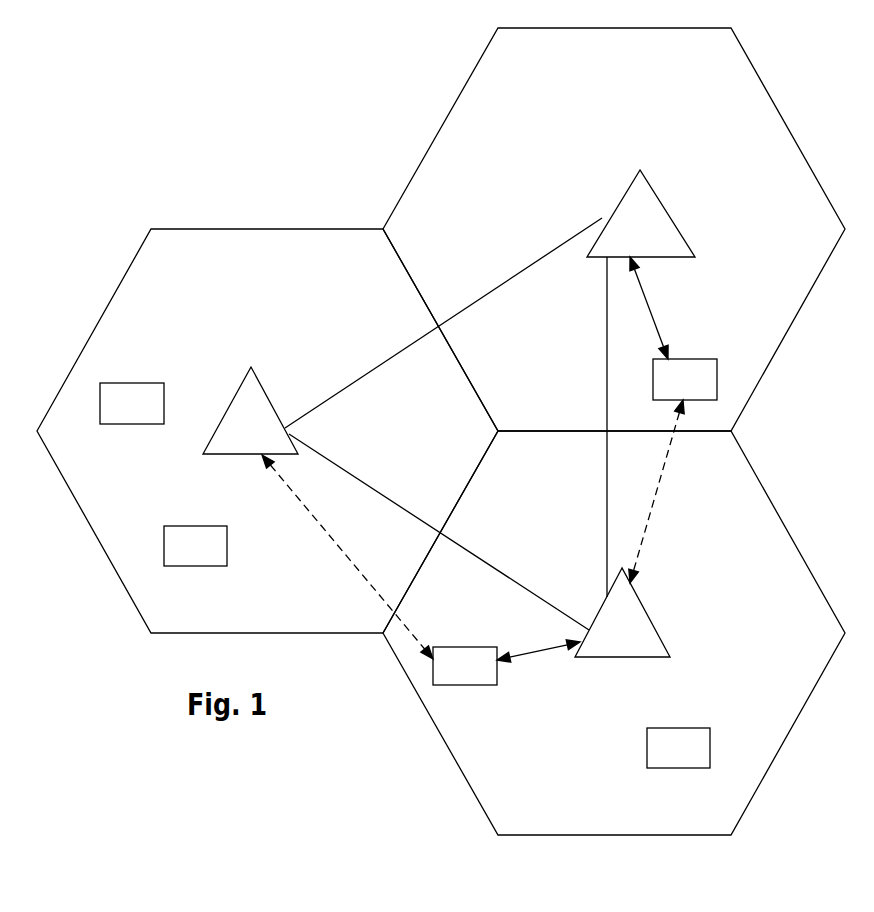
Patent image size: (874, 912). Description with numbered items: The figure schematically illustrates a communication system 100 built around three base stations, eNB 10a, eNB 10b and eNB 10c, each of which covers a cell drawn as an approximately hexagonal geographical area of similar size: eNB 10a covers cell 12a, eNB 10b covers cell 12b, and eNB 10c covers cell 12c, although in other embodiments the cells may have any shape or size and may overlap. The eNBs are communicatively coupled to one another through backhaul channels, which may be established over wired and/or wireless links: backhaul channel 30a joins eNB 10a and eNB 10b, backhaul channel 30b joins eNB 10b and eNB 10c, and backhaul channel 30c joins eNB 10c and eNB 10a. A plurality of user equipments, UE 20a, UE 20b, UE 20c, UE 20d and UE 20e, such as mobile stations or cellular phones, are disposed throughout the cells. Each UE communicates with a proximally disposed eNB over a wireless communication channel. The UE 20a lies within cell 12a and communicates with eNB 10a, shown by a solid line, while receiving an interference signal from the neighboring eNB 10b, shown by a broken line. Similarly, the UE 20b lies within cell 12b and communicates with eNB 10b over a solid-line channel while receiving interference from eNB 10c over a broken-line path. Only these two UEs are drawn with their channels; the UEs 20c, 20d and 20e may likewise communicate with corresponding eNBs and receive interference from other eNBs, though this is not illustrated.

The communication system 100 is at (280, 54).
The cell 12a is at (614, 229).
The cell 12b is at (614, 633).
The cell 12c is at (267, 431).
The eNB 10a is at (641, 213).
The eNB 10b is at (622, 612).
The eNB 10c is at (250, 410).
The user equipment 20a is at (685, 379).
The user equipment 20b is at (465, 666).
The user equipment 20c is at (678, 748).
The user equipment 20d is at (195, 546).
The user equipment 20e is at (132, 403).
The backhaul channel 30a is at (563, 427).
The backhaul channel 30b is at (439, 532).
The backhaul channel 30c is at (443, 323).